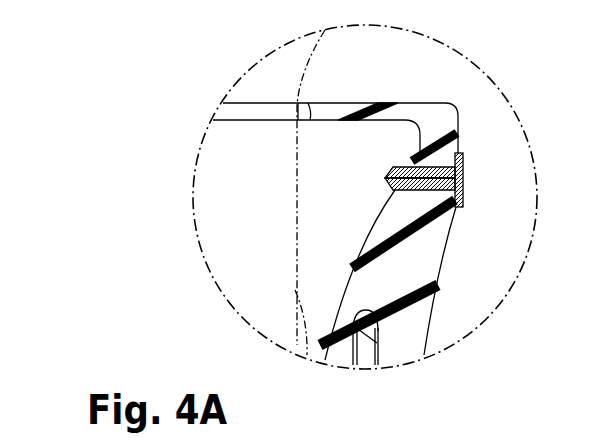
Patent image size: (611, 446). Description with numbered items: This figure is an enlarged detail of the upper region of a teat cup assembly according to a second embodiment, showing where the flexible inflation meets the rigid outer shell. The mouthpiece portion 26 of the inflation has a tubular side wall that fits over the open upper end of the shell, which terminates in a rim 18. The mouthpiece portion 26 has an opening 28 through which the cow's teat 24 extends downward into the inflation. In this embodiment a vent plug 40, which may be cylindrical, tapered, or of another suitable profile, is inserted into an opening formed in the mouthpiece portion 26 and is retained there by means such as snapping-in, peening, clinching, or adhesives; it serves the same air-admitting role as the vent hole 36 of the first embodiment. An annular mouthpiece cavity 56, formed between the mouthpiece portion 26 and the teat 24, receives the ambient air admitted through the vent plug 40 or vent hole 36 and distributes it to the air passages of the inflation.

The rim 18 is at (372, 311).
The teat 24 is at (307, 355).
The mouthpiece portion 26 is at (440, 273).
The opening 28 is at (298, 102).
The air vent hole 36 is at (463, 187).
The vent plug 40 is at (463, 167).
The mouthpiece cavity 56 is at (341, 155).